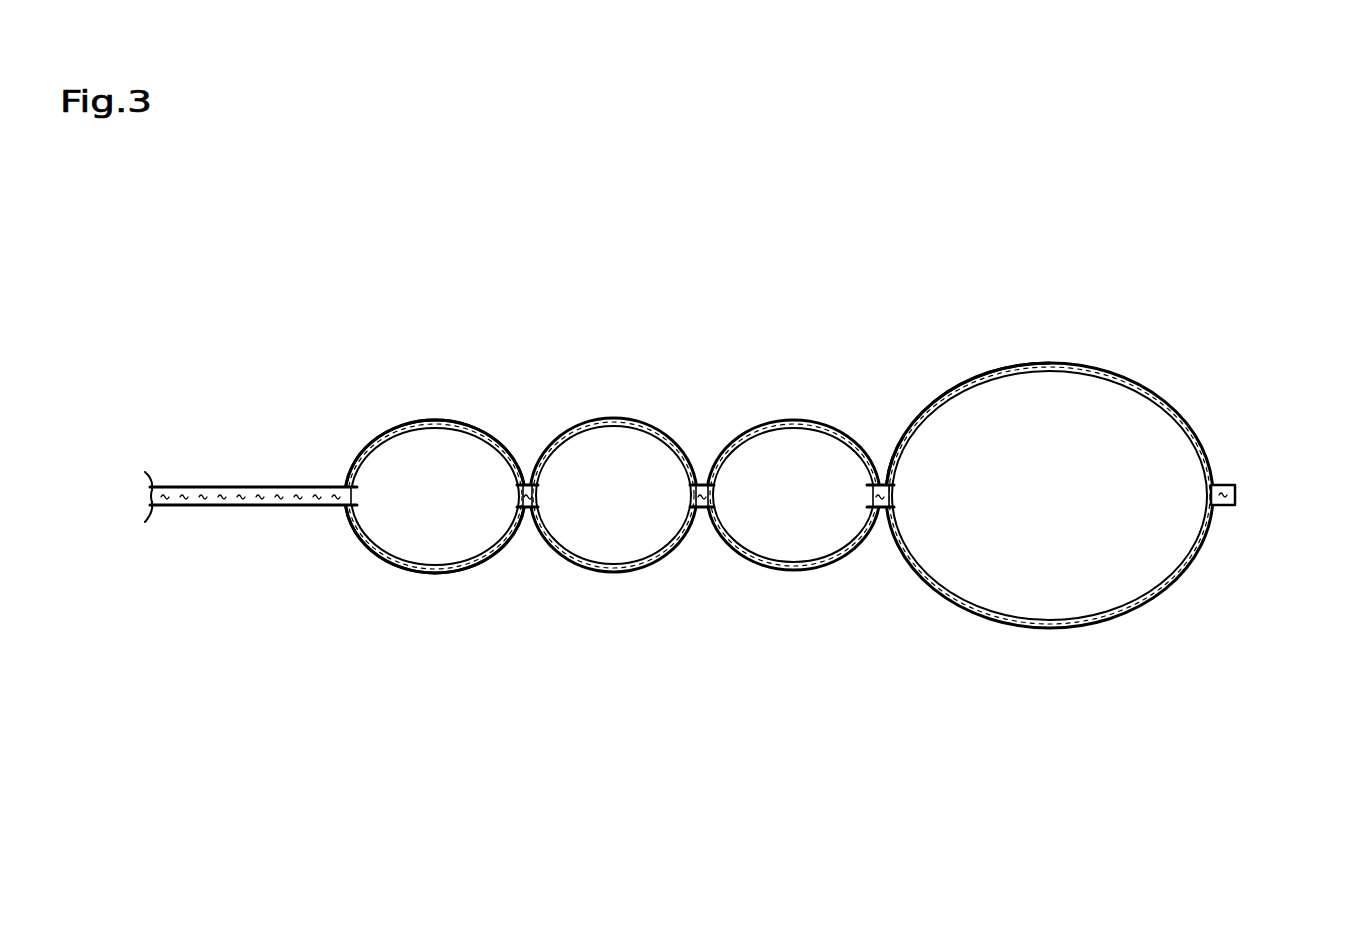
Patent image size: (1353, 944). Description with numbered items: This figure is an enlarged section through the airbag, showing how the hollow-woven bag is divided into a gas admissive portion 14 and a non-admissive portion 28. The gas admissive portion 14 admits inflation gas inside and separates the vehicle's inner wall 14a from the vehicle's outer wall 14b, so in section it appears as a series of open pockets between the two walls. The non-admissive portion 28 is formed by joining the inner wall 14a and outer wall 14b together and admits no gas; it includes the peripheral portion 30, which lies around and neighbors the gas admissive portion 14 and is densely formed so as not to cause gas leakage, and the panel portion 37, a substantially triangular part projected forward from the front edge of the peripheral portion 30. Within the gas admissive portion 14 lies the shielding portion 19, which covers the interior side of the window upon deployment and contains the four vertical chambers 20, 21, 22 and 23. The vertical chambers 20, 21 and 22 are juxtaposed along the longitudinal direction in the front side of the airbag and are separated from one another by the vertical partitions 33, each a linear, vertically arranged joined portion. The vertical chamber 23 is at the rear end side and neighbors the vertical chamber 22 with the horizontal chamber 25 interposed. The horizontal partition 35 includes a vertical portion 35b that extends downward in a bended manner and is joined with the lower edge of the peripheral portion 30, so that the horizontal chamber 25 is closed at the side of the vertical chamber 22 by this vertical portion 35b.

The gas admissive portion 14 is at (745, 531).
The vehicle's inner wall 14a is at (428, 574).
The vehicle's outer wall 14b is at (413, 425).
The shielding portion 19 is at (826, 531).
The vertical chamber 20 is at (435, 498).
The vertical chamber 21 is at (610, 422).
The vertical chamber 22 is at (788, 423).
The vertical chamber 23 is at (1097, 449).
The horizontal chamber 25 is at (936, 402).
The non-admissive portion 28 is at (745, 457).
The peripheral portion 30 is at (1236, 494).
The vertical partition 33 is at (698, 483).
The horizontal partition 35 is at (898, 394).
The vertical portion 35b is at (881, 483).
The panel portion 37 is at (250, 507).